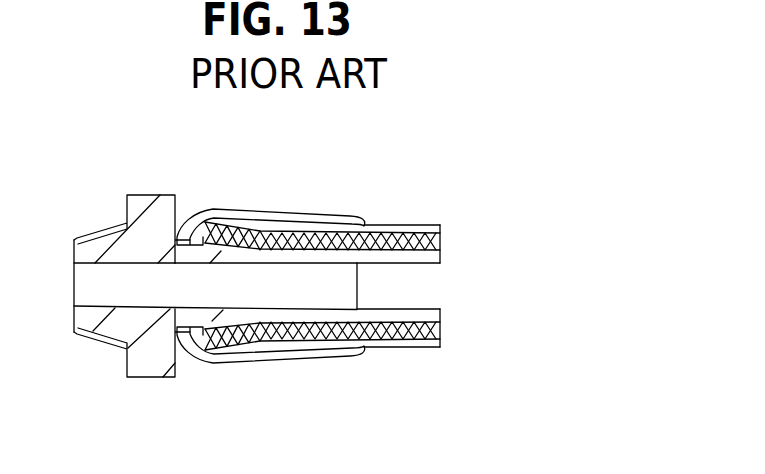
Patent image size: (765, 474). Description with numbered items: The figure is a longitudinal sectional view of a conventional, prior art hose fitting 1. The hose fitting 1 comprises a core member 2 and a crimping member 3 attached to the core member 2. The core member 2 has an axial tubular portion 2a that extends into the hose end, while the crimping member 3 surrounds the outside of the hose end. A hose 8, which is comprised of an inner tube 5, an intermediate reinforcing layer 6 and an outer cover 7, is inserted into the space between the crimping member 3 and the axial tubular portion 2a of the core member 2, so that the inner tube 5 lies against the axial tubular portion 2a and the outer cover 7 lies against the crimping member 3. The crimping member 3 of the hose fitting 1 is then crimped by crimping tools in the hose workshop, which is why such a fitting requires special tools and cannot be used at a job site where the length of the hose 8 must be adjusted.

The hose fitting 1 is at (449, 171).
The core member 2 is at (103, 229).
The axial tubular portion 2a is at (374, 264).
The crimping member 3 is at (223, 210).
The inner tube 5 is at (430, 313).
The intermediate reinforcing layer 6 is at (442, 330).
The outer cover 7 is at (430, 349).
The hose 8 is at (348, 326).